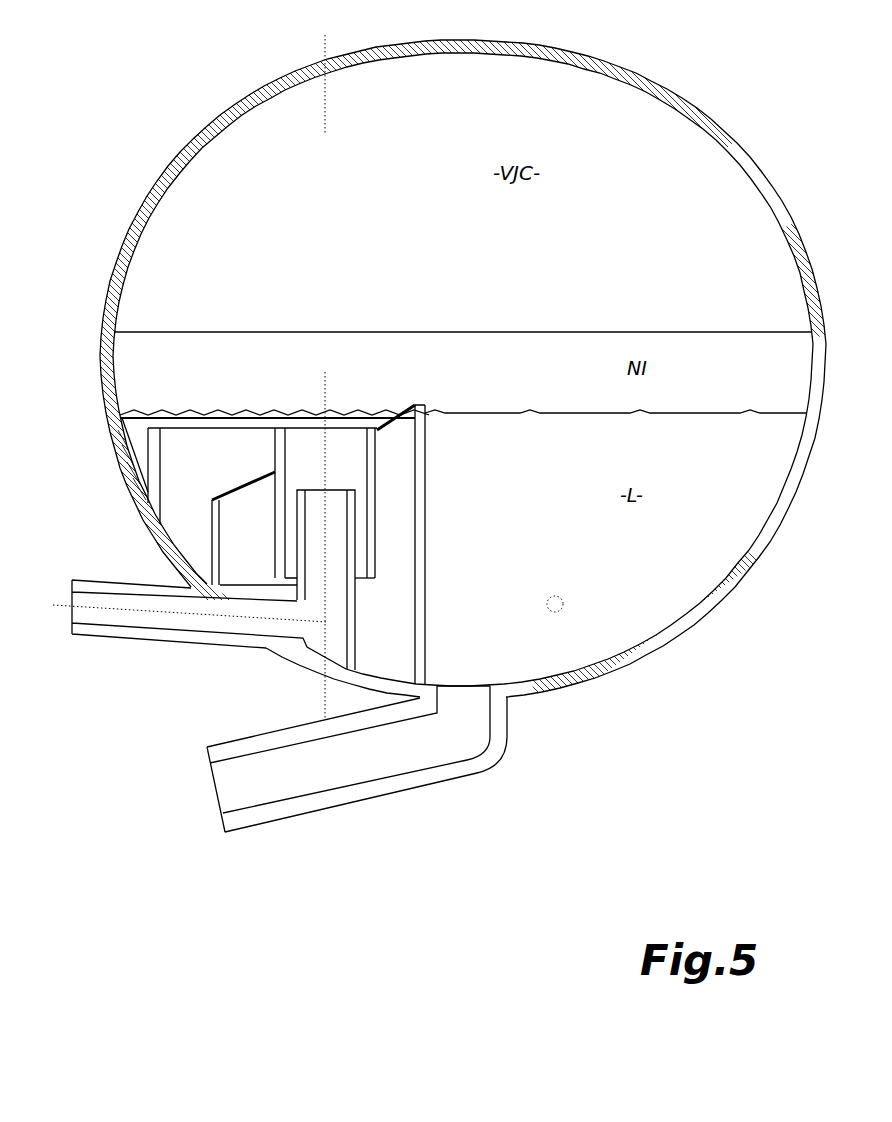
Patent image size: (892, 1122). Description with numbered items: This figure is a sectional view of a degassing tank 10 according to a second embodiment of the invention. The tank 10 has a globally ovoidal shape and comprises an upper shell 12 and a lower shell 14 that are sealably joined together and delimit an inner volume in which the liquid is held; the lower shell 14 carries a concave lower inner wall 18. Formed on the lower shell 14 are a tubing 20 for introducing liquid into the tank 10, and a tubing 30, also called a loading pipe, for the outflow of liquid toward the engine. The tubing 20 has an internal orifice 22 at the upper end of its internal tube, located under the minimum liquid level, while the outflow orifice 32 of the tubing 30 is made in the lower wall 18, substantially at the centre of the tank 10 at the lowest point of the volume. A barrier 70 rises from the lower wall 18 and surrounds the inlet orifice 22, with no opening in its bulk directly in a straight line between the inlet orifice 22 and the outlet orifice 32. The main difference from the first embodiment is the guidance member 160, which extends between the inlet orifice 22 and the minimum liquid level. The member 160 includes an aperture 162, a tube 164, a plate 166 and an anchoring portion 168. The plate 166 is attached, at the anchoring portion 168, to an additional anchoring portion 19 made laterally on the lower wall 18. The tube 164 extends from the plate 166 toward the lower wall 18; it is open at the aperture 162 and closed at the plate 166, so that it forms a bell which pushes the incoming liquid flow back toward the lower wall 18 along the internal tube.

The degassing tank 10 is at (232, 376).
The upper shell 12 is at (723, 132).
The lower shell 14 is at (705, 612).
The lower inner wall 18 is at (600, 648).
The additional anchoring portion 19 is at (163, 447).
The tubing for introducing liquid 20 is at (140, 705).
The internal orifice 22 is at (352, 388).
The tubing for outflow of liquid 30 is at (340, 852).
The outflow orifice 32 is at (470, 665).
The barrier 70 is at (430, 538).
The guidance member 160 is at (356, 470).
The aperture 162 is at (377, 604).
The tube 164 is at (380, 502).
The plate 166 is at (280, 430).
The anchoring portion 168 is at (117, 447).